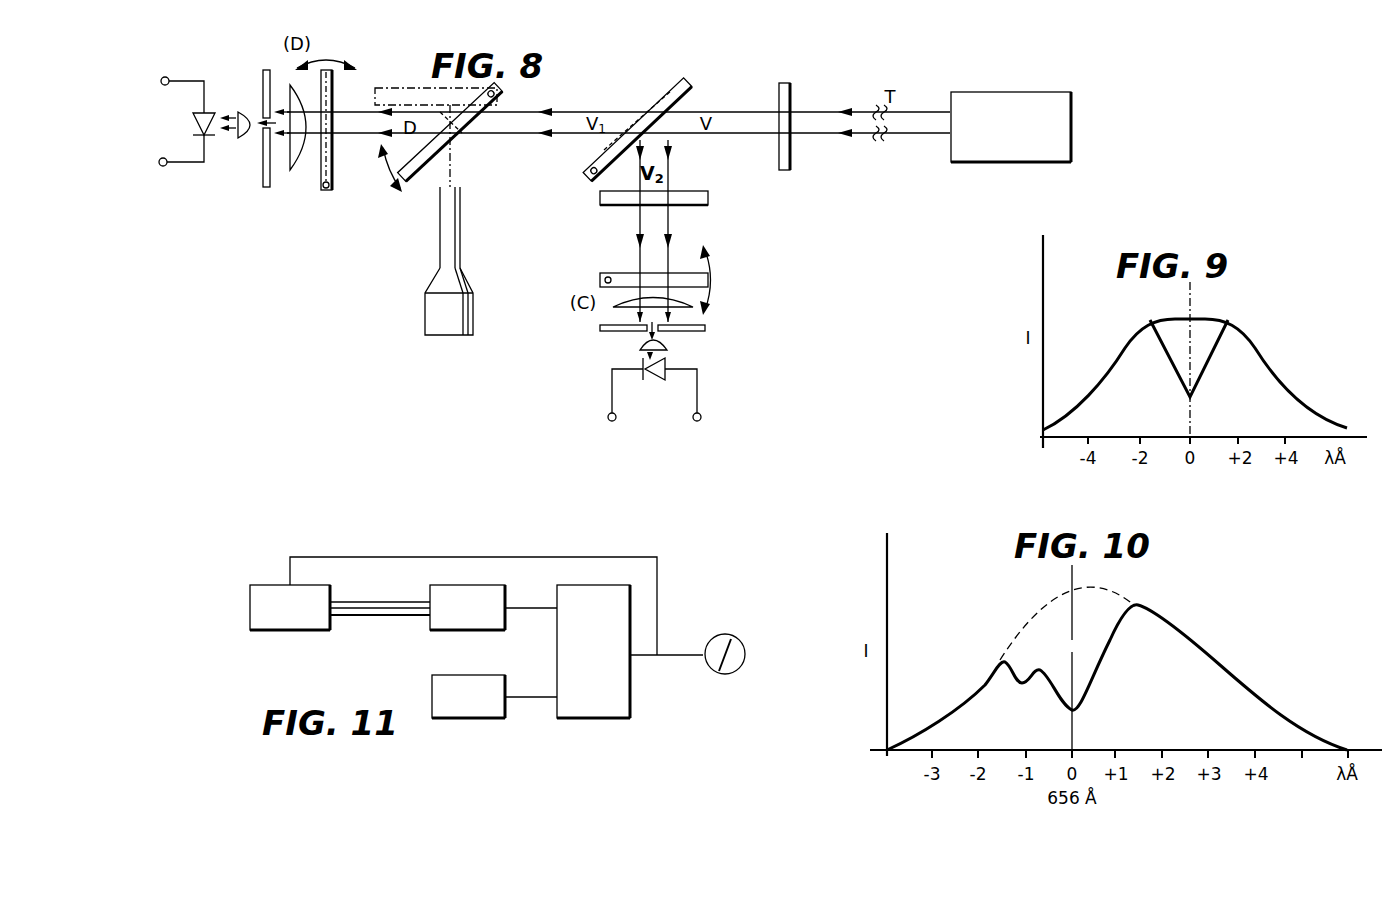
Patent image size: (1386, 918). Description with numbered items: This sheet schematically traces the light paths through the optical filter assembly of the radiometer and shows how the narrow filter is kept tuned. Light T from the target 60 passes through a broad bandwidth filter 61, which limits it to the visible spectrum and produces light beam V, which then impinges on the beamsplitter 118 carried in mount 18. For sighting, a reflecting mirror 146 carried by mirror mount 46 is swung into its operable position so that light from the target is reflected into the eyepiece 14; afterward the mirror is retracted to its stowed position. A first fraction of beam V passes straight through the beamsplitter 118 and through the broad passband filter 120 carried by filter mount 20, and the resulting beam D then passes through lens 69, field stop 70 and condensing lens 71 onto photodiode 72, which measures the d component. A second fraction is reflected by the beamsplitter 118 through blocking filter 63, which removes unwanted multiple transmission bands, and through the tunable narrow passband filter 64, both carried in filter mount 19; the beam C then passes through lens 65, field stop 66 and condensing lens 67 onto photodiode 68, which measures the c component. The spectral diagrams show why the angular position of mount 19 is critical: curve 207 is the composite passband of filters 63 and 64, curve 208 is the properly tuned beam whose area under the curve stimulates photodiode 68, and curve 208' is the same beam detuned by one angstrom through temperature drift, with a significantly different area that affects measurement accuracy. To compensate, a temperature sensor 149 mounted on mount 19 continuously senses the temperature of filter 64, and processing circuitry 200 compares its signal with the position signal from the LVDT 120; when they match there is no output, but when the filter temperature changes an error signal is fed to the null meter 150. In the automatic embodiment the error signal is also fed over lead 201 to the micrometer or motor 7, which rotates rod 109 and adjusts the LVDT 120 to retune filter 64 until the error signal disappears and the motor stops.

In FIG. 8, the eyepiece 14 is at (440, 310).
In FIG. 8, the mount 18 is at (692, 82).
In FIG. 8, the filter mount 19 is at (716, 277).
In FIG. 8, the filter mount 20 is at (334, 86).
In FIG. 8, the mirror mount 46 is at (422, 187).
In FIG. 8, the target 60 is at (1073, 126).
In FIG. 8, the broad bandwidth filter 61 is at (790, 100).
In FIG. 8, the blocking filter 63 is at (700, 191).
In FIG. 8, the narrow passband filter 64 is at (618, 273).
In FIG. 8, the lens 65 is at (684, 308).
In FIG. 8, the field stop 66 is at (600, 330).
In FIG. 8, the condensing lens 67 is at (640, 344).
In FIG. 8, the photodiode 68 is at (664, 378).
In FIG. 8, the lens 69 is at (289, 150).
In FIG. 8, the field stop 70 is at (265, 68).
In FIG. 8, the condensing lens 71 is at (248, 139).
In FIG. 8, the photodiode 72 is at (195, 124).
In FIG. 8, the beamsplitter 118 is at (650, 122).
In FIG. 8, the filter 120 is at (332, 128).
In FIG. 11, the filter 120 is at (475, 630).
In FIG. 8, the reflecting mirror 146 is at (463, 132).
In FIG. 9, the curve 207 is at (1170, 317).
In FIG. 9, the curve 208 is at (1176, 362).
In FIG. 10, the curve 208' is at (1117, 667).
In FIG. 11, the motor 7 is at (264, 630).
In FIG. 11, the rod 109 is at (378, 615).
In FIG. 11, the temperature sensor 149 is at (482, 718).
In FIG. 11, the null meter 150 is at (720, 672).
In FIG. 11, the processing circuitry 200 is at (597, 718).
In FIG. 11, the lead 201 is at (370, 557).